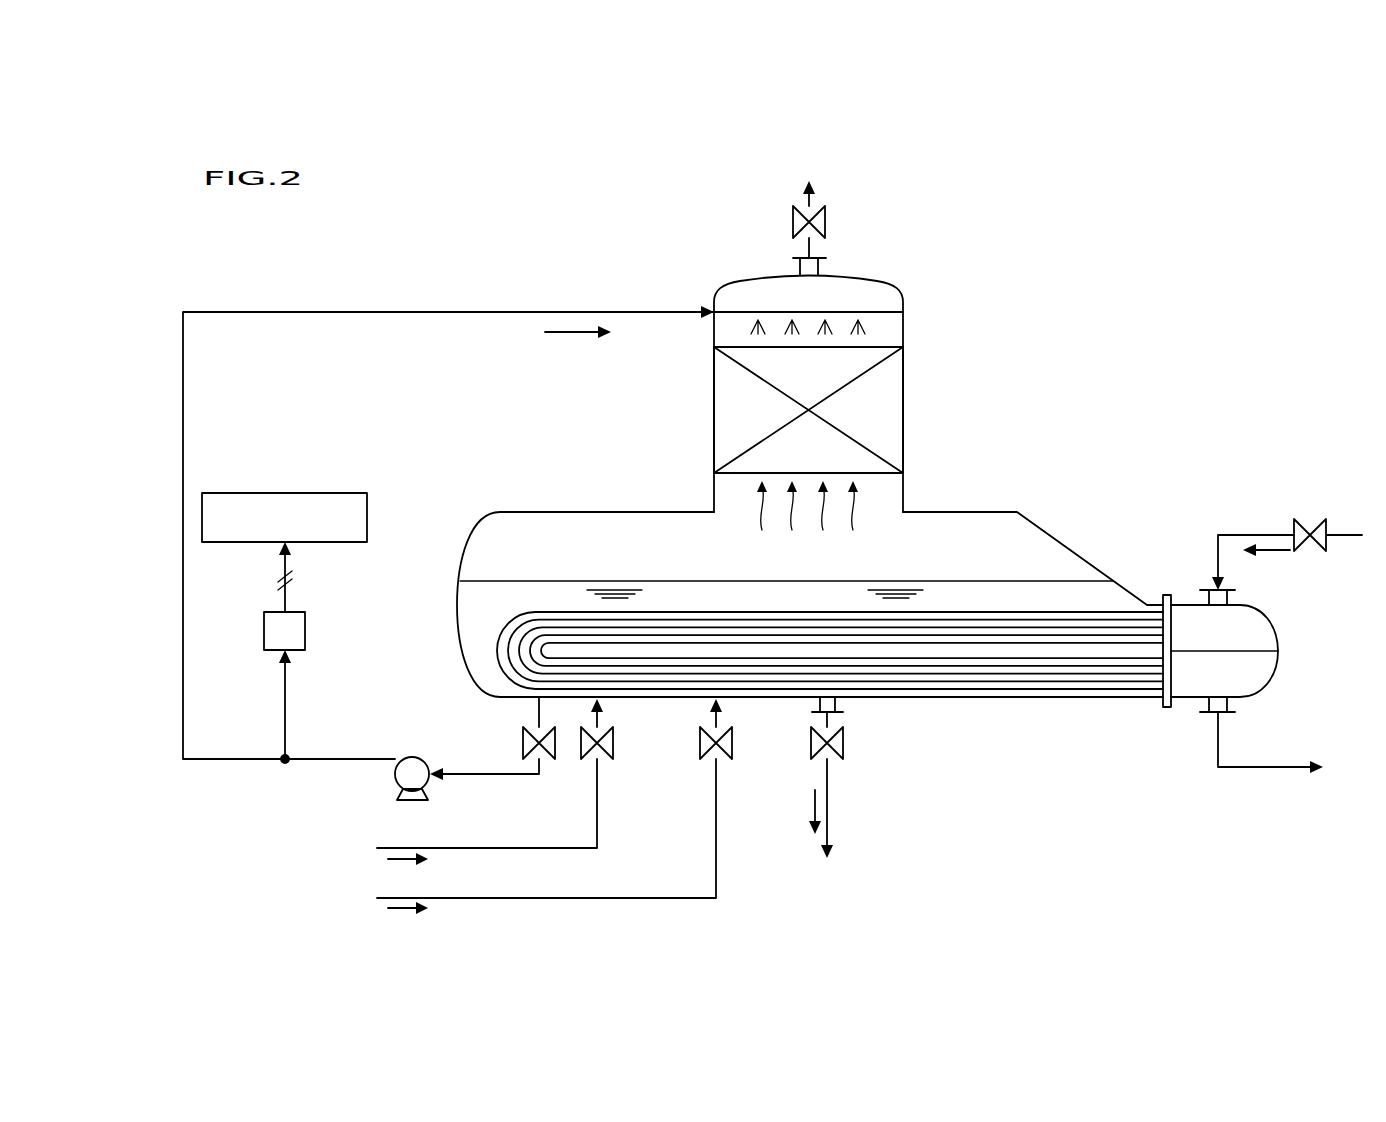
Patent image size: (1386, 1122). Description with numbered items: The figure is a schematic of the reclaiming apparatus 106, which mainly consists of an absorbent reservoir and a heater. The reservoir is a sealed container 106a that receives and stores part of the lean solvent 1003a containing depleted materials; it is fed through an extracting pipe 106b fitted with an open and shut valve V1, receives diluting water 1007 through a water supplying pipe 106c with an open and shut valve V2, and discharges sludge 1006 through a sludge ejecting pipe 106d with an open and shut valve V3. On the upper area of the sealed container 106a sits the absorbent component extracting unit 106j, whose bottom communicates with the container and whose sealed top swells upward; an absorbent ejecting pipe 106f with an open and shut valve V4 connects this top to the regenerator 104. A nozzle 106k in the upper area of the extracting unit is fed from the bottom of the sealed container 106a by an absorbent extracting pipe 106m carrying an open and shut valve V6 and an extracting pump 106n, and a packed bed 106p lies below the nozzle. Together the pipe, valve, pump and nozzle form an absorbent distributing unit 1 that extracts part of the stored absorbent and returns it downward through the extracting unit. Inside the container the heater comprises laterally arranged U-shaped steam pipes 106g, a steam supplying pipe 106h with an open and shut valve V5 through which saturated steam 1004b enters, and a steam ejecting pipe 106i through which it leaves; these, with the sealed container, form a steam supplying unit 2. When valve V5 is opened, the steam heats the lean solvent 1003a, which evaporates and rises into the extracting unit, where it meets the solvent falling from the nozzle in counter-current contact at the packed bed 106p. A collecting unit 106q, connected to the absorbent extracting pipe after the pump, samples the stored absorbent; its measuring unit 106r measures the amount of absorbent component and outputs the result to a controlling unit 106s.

The absorbent distributing unit 1 is at (455, 305).
The steam supplying unit 2 is at (1085, 596).
The regenerator 104 is at (810, 179).
The reclaiming apparatus 106 is at (1040, 512).
The sealed container 106a is at (953, 510).
The extracting pipe 106b is at (380, 846).
The water supplying pipe 106c is at (652, 897).
The sludge ejecting pipe 106d is at (835, 772).
The absorbent ejecting pipe 106f is at (800, 243).
The steam pipes 106g is at (1062, 692).
The steam supplying pipe 106h is at (1248, 533).
The steam ejecting pipe 106i is at (1243, 770).
The absorbent component extracting unit 106j is at (713, 489).
The nozzle 106k is at (878, 310).
The absorbent extracting pipe 106m is at (522, 775).
The extracting pump 106n is at (413, 757).
The packed bed 106p is at (890, 368).
The collecting unit 106q is at (290, 737).
The measuring unit 106r is at (306, 630).
The controlling unit 106s is at (306, 492).
The lean solvent 1003a is at (570, 340).
The saturated steam 1004b is at (1268, 555).
The sludge 1006 is at (812, 810).
The diluting water 1007 is at (405, 915).
The open and shut valve V1 is at (613, 745).
The open and shut valve V2 is at (733, 748).
The open and shut valve V3 is at (845, 740).
The open and shut valve V4 is at (822, 222).
The open and shut valve V5 is at (1306, 525).
The open and shut valve V6 is at (522, 737).